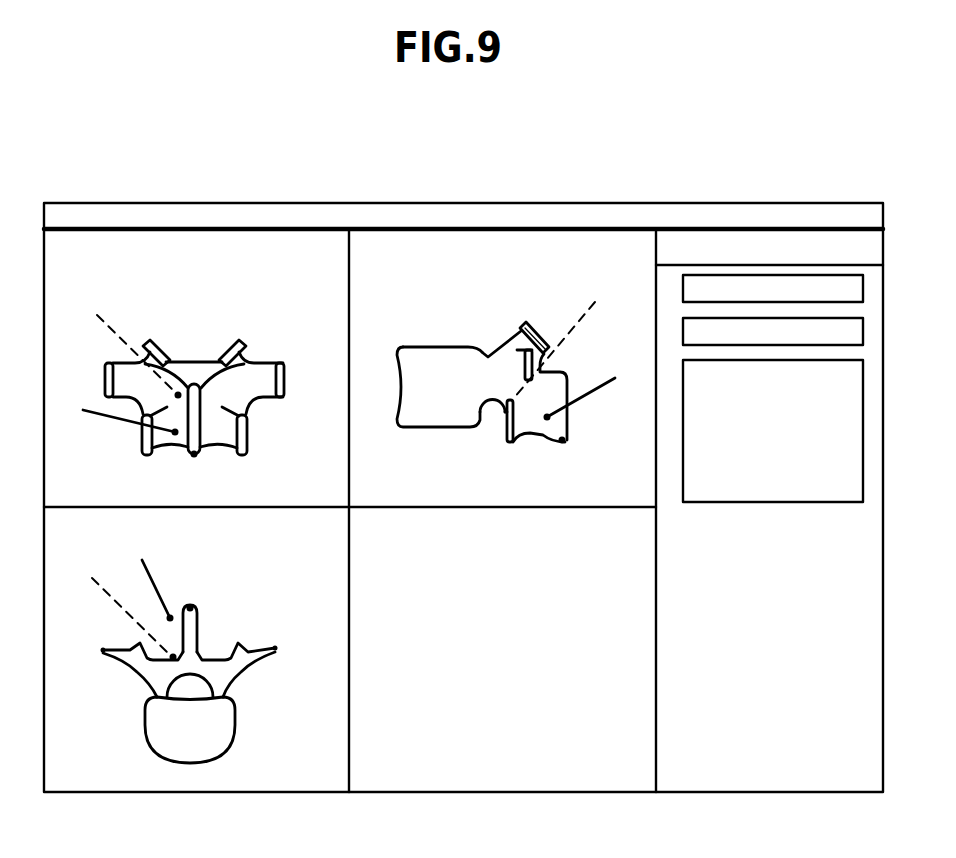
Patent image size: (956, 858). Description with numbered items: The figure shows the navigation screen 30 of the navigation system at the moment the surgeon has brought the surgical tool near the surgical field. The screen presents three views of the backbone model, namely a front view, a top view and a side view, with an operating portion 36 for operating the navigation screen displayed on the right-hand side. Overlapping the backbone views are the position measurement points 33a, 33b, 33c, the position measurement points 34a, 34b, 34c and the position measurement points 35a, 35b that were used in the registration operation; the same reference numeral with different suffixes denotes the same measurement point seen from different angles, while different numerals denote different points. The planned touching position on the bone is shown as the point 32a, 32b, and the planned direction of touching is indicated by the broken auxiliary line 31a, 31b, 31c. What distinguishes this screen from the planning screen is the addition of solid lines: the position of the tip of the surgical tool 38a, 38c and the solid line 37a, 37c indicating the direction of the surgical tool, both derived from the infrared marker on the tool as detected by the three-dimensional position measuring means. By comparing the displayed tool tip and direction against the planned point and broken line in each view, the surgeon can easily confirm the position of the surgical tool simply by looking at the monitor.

The navigation screen 30 is at (657, 202).
The broken line 31a is at (117, 601).
The broken line 31b is at (110, 327).
The broken line 31c is at (582, 315).
The point 32a is at (171, 659).
The point 32b is at (178, 390).
The position measurement point 33a is at (102, 648).
The position measurement point 33b is at (106, 363).
The position measurement point 33c is at (521, 345).
The position measurement point 34a is at (192, 606).
The position measurement point 34b is at (196, 457).
The position measurement point 34c is at (562, 445).
The position measurement point 35a is at (278, 648).
The position measurement point 35b is at (283, 363).
The operating portion 36 is at (767, 504).
The solid line 37a is at (113, 418).
The solid line 37c is at (592, 393).
The position of the tip of the surgical tool 38a is at (173, 437).
The position of the tip of the surgical tool 38c is at (547, 422).